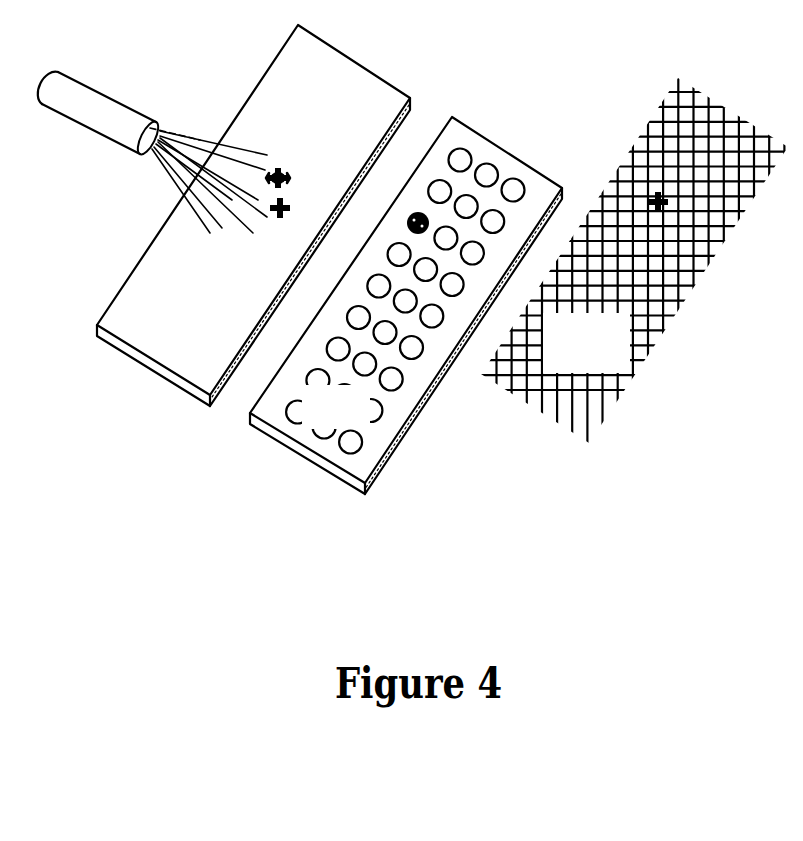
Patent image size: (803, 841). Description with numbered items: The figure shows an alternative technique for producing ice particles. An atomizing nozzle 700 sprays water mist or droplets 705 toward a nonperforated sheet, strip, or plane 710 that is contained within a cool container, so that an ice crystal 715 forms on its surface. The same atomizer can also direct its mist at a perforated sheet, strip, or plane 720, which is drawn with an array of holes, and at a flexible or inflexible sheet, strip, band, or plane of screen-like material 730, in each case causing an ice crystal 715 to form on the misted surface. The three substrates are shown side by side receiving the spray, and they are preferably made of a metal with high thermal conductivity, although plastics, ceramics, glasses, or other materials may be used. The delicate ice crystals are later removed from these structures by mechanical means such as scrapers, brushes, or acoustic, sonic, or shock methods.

The atomizing nozzle 700 is at (121, 67).
The water mist or droplets 705 is at (167, 166).
The nonperforated sheet, strip, or plane 710 is at (200, 306).
The ice crystal 715 is at (644, 194).
The perforated sheet, strip, or plane 720 is at (366, 422).
The sheet, strip, band, or plane of screen-like material 730 is at (612, 360).